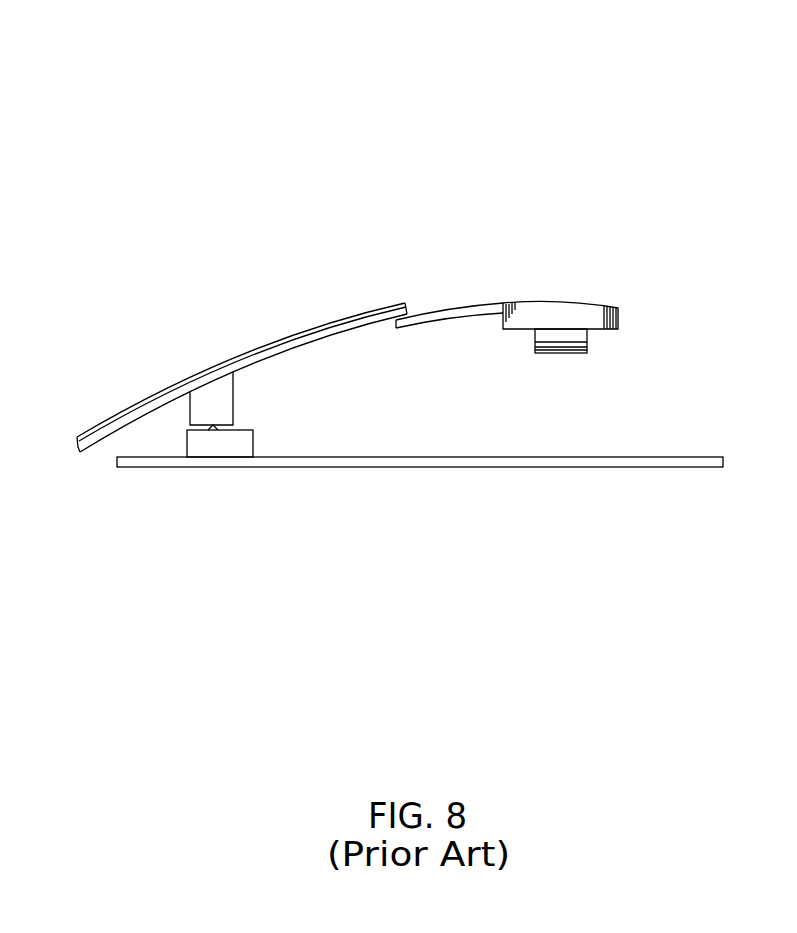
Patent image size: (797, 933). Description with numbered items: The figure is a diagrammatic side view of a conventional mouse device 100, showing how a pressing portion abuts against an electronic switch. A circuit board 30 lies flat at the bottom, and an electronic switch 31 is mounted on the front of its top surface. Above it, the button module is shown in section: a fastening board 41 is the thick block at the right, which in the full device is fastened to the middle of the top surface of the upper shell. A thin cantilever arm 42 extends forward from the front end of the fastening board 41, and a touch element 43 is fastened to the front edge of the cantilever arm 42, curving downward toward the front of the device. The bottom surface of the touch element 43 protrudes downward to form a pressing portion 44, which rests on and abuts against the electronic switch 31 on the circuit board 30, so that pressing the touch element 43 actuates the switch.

The conventional mouse device 100 is at (85, 43).
The circuit board 30 is at (667, 457).
The electronic switch 31 is at (212, 430).
The fastening board 41 is at (552, 301).
The cantilever arm 42 is at (445, 312).
The touch element 43 is at (290, 340).
The pressing portion 44 is at (222, 397).